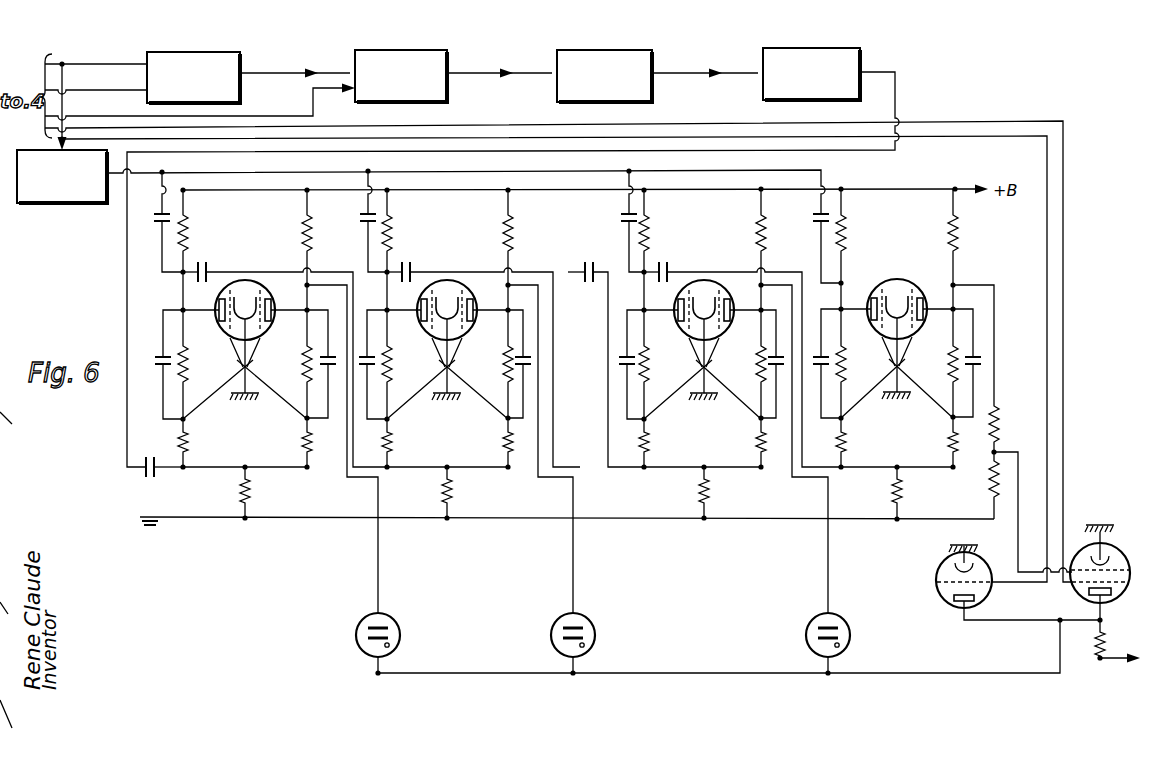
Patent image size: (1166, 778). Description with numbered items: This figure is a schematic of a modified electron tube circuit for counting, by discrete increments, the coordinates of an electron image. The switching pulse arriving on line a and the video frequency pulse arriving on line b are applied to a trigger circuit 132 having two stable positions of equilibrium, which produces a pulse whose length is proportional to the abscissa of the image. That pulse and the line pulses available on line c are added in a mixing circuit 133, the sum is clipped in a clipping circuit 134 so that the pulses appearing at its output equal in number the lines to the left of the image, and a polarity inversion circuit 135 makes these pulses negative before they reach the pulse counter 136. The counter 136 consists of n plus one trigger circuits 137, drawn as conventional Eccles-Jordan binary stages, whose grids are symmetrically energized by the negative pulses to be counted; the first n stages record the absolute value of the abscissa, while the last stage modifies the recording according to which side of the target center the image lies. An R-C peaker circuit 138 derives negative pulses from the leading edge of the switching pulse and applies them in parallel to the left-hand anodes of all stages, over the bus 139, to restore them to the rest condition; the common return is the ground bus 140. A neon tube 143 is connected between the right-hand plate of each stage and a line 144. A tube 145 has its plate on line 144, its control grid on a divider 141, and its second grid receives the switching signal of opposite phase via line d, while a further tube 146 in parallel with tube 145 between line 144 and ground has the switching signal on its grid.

The trigger circuit 132 is at (195, 69).
The mixing circuit 133 is at (398, 67).
The clipping circuit 134 is at (600, 67).
The polarity inversion circuit 135 is at (813, 59).
The pulse counter 136 is at (655, 561).
The trigger circuit 137 is at (567, 392).
The R-C peaker circuit 138 is at (57, 193).
The input bus line 139 is at (212, 177).
The ground bus 140 is at (200, 522).
The divider 141 is at (985, 442).
The neon tube 143 is at (401, 645).
The line 144 is at (705, 672).
The tube 145 is at (1124, 560).
The tube 146 is at (930, 602).
The line a is at (89, 65).
The line b is at (90, 82).
The line c is at (112, 111).
The line d is at (128, 127).